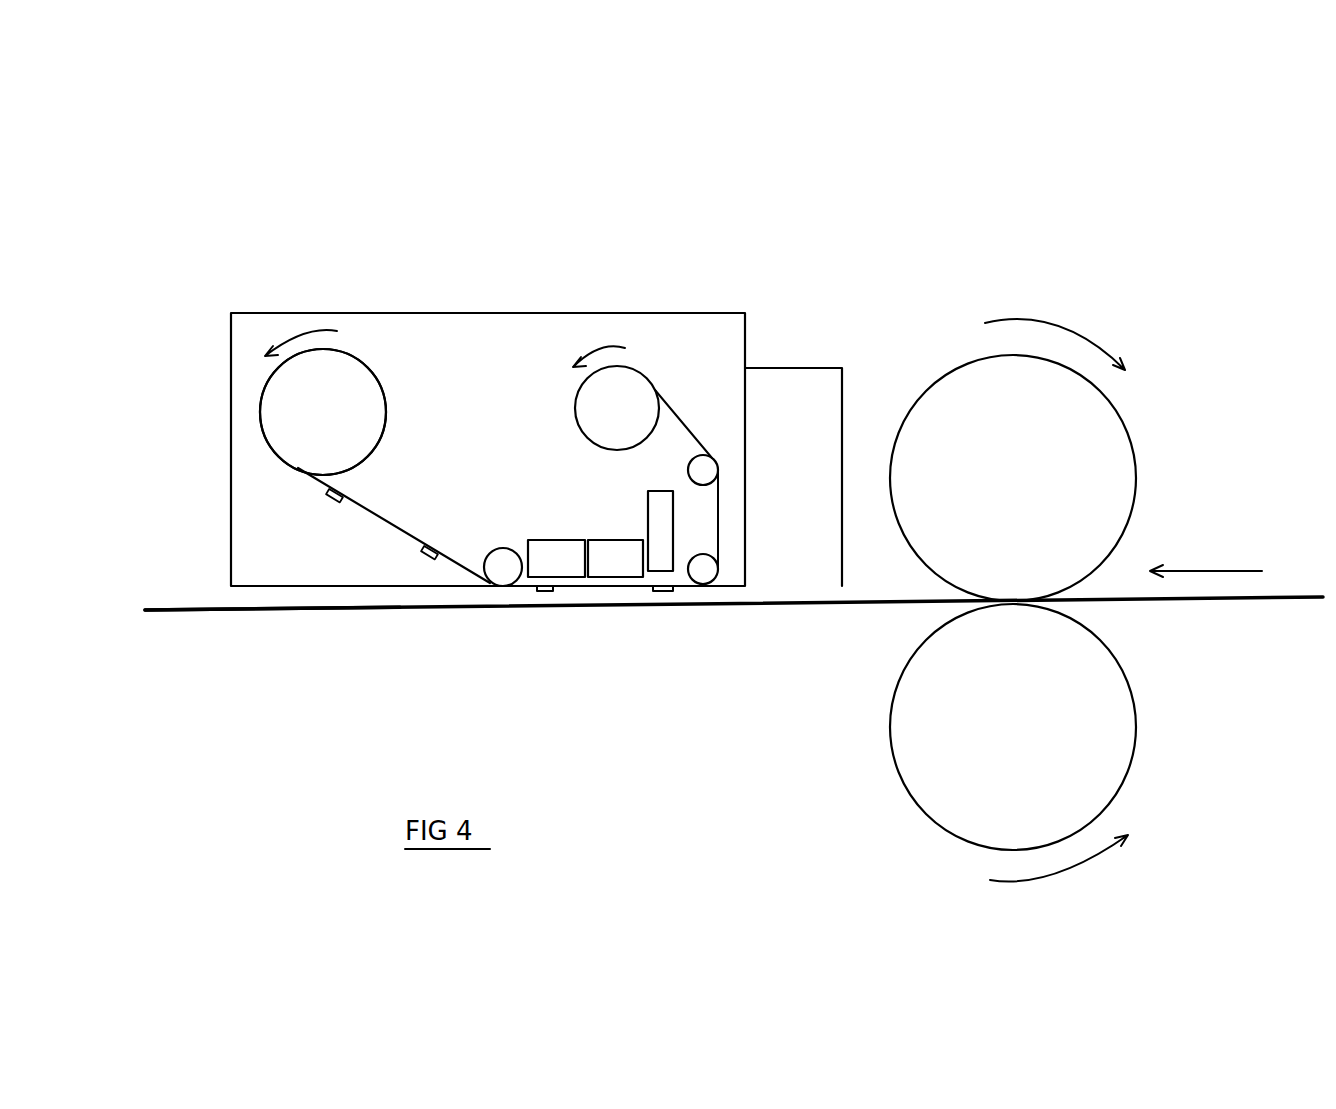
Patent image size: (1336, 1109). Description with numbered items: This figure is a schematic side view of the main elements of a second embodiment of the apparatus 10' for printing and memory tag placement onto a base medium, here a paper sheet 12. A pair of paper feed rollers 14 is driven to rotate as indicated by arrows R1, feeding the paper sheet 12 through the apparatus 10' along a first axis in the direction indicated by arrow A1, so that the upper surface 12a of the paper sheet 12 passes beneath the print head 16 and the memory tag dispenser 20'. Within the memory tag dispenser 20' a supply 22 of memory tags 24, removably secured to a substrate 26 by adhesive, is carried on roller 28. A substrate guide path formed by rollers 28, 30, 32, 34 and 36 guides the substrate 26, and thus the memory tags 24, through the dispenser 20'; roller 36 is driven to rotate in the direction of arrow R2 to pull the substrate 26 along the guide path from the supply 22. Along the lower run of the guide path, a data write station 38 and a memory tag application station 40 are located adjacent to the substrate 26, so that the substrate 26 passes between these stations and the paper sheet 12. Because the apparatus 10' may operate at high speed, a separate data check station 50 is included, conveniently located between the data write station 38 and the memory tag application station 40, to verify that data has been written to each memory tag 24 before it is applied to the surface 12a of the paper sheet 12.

The apparatus 10' is at (1146, 230).
The paper sheet 12 is at (1196, 612).
The upper surface 12a is at (165, 609).
The paper feed rollers 14 is at (1137, 462).
The print head 16 is at (842, 393).
The memory tag dispenser 20' is at (488, 352).
The supply 22 is at (253, 377).
The memory tags 24 is at (430, 552).
The substrate 26 is at (370, 510).
The roller 28 is at (345, 385).
The roller 30 is at (508, 578).
The roller 32 is at (703, 584).
The roller 34 is at (706, 455).
The roller 36 is at (575, 408).
The data write station 38 is at (543, 580).
The memory tag application station 40 is at (678, 580).
The data check station 50 is at (617, 578).
The arrows R1 is at (1093, 342).
The arrow R2 is at (312, 332).
The arrows A1 is at (1237, 571).